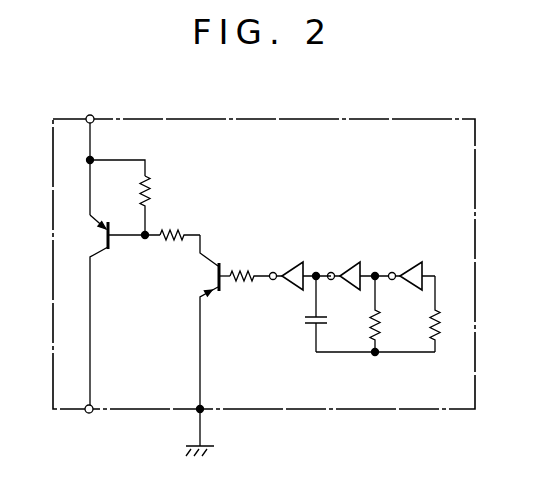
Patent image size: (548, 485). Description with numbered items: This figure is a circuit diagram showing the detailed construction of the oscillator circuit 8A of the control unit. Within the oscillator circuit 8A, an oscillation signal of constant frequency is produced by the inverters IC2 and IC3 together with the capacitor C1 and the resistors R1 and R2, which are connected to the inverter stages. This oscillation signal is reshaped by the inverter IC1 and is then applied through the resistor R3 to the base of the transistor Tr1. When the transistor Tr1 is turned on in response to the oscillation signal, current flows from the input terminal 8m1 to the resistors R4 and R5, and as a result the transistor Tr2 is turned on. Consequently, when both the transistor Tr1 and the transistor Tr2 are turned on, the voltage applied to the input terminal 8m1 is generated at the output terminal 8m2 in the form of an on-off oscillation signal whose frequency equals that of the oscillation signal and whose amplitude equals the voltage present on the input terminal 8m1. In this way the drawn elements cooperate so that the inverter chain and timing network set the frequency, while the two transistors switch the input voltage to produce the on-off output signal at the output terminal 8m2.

The oscillator circuit 8A is at (413, 121).
The input terminal 8m1 is at (98, 103).
The output terminal 8m2 is at (91, 413).
The transistor Tr1 is at (213, 270).
The transistor Tr2 is at (110, 238).
The resistor R1 is at (369, 324).
The resistor R2 is at (429, 324).
The resistor R3 is at (243, 269).
The resistor R4 is at (180, 238).
The resistor R5 is at (152, 193).
The capacitor C1 is at (306, 325).
The inverter IC1 is at (292, 267).
The inverter IC2 is at (352, 267).
The inverter IC3 is at (413, 267).